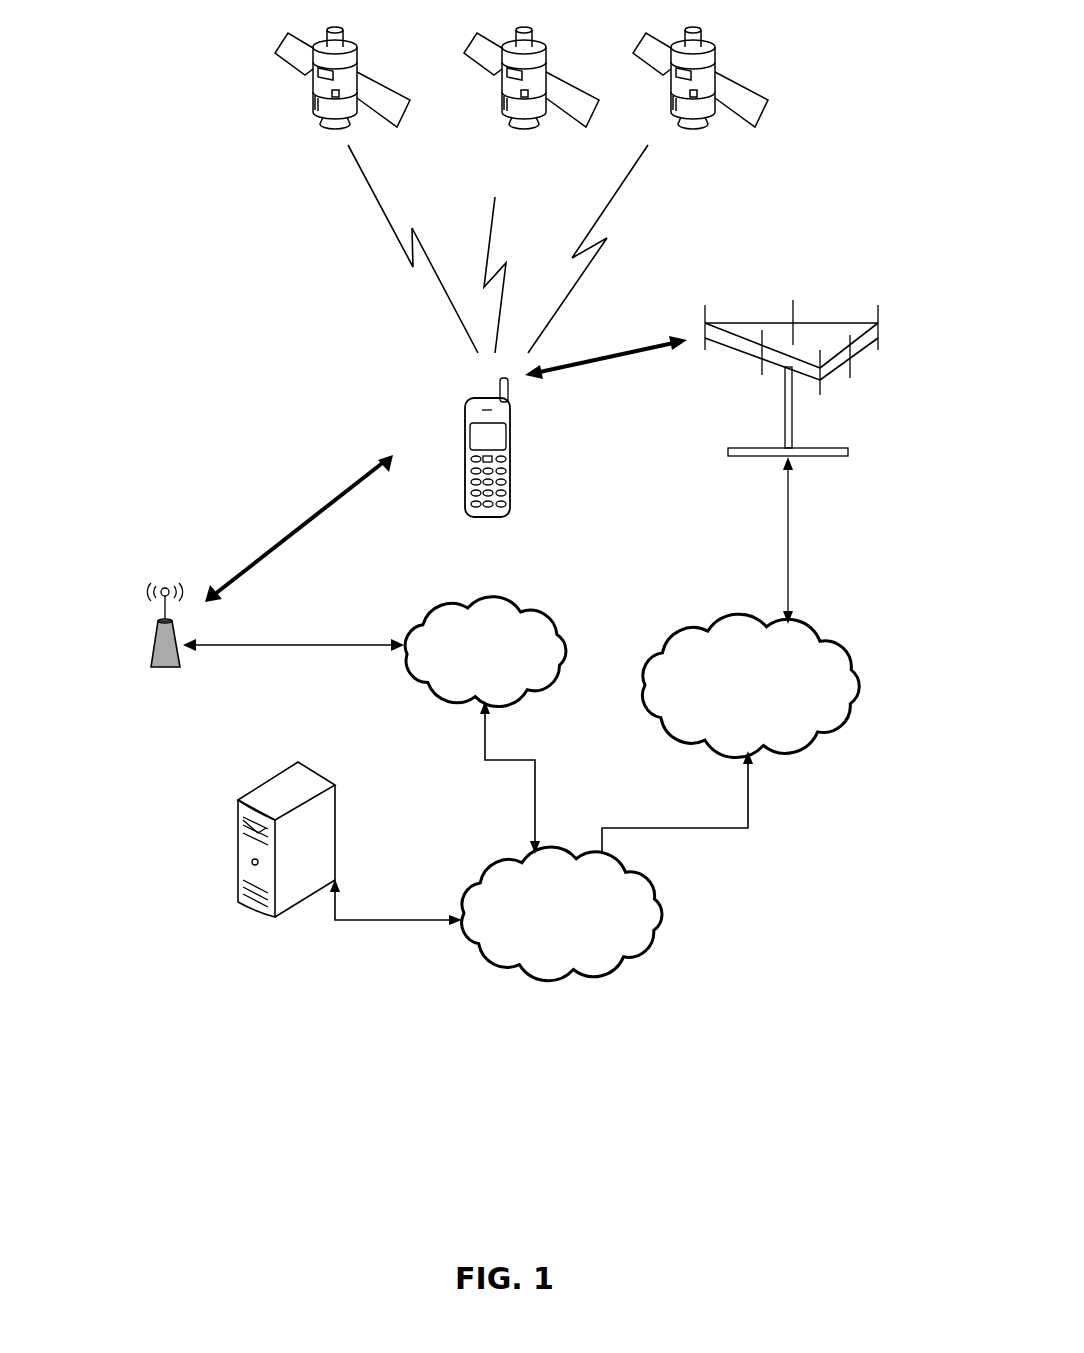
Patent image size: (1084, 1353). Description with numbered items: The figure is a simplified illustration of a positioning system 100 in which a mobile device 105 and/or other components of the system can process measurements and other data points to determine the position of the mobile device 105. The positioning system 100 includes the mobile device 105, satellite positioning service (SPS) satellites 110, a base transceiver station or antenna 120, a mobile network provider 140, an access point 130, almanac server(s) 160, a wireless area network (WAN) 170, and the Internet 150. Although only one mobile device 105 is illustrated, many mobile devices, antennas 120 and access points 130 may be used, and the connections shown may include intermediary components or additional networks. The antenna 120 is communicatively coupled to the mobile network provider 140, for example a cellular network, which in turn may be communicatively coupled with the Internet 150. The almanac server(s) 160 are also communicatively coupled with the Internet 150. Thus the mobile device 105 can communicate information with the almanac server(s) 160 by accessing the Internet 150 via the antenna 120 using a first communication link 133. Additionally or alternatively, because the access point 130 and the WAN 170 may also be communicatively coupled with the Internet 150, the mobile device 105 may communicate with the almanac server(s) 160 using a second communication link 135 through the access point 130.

The positioning system 100 is at (180, 1112).
The mobile device 105 is at (465, 444).
The satellite positioning service (SPS) satellites 110 is at (250, 88).
The base transceiver station 120 is at (836, 458).
The access point 130 is at (175, 668).
The first communication link 133 is at (600, 366).
The second communication link 135 is at (302, 528).
The mobile network provider 140 is at (835, 646).
The Internet 150 is at (660, 921).
The almanac server 160 is at (312, 778).
The wireless area network (WAN) 170 is at (545, 686).